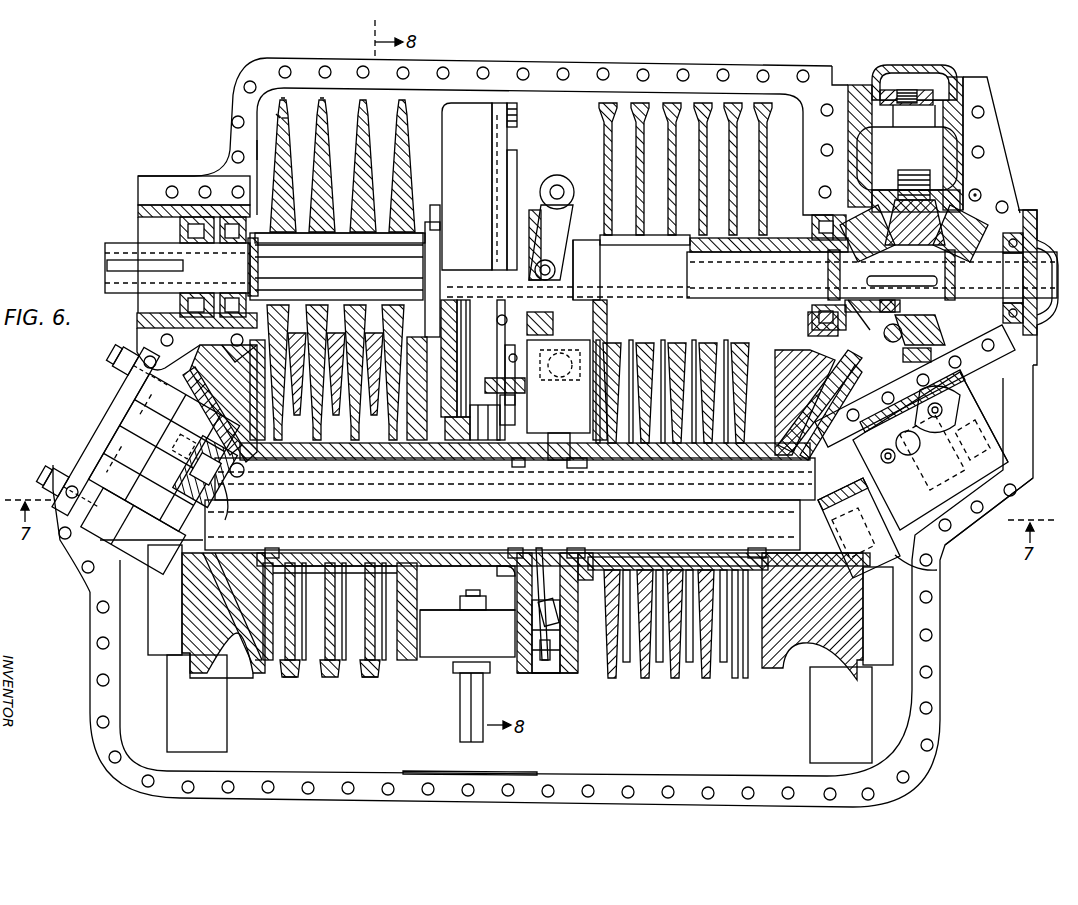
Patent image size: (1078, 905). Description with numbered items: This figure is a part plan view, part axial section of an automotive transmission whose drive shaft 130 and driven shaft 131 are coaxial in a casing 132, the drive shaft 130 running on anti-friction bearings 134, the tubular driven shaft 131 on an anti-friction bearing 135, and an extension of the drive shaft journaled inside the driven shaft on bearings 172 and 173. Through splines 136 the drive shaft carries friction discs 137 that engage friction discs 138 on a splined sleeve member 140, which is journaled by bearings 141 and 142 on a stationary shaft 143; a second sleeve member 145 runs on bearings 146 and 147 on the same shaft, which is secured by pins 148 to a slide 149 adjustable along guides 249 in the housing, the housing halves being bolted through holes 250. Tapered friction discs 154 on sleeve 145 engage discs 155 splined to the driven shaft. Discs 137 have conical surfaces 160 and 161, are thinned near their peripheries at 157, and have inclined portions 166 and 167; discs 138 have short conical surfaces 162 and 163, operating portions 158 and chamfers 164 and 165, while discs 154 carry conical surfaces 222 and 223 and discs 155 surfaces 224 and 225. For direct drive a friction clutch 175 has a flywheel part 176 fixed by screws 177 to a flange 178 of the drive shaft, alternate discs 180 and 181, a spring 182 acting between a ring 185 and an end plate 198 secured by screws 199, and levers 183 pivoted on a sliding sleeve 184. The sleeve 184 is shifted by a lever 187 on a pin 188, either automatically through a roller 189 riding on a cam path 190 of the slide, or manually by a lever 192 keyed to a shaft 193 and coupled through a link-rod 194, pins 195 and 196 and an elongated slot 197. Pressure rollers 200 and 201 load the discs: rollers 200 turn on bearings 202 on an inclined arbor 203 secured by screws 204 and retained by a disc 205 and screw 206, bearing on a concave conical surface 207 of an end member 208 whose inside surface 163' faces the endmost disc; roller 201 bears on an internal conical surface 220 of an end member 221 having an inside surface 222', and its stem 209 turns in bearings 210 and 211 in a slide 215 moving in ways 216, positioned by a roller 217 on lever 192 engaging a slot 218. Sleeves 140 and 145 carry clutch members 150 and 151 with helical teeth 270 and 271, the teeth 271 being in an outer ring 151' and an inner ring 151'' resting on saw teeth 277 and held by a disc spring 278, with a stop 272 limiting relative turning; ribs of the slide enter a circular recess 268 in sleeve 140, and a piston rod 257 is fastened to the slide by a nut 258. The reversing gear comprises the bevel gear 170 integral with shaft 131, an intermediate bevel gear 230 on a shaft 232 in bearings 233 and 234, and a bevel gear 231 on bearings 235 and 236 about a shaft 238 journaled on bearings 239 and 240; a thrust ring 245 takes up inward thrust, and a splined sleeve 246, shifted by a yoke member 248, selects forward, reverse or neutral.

The drive shaft 130 is at (130, 250).
The driven shaft 131 is at (776, 240).
The casing 132 is at (537, 75).
The anti-friction bearings 134 is at (230, 218).
The anti-friction bearing 135 is at (822, 225).
The splines 136 is at (252, 262).
The friction discs 137 is at (322, 98).
The friction discs 138 is at (315, 610).
The sleeve member 140 is at (420, 553).
The anti-friction bearings 141 is at (280, 548).
The anti-friction bearings 142 is at (505, 572).
The stationary shaft 143 is at (440, 570).
The second sleeve member 145 is at (736, 672).
The cylindrical anti-friction bearings 146 is at (578, 550).
The cylindrical anti-friction bearings 147 is at (755, 548).
The pins 148 is at (190, 572).
The slide 149 is at (160, 640).
The clutch member 150 is at (525, 673).
The clutch member 151 is at (576, 625).
The outer ring 151' is at (544, 649).
The inner ring 151'' is at (509, 650).
The tapered friction discs 154 is at (644, 678).
The friction discs 155 is at (608, 108).
The thinned down portions 157 is at (403, 110).
The operating portions 158 is at (332, 678).
The conical operating surface 160 is at (262, 146).
The conical operating surface 161 is at (305, 160).
The conical operating surface 162 is at (283, 670).
The conical operating surface 163 is at (318, 679).
The conical surface 163' is at (248, 680).
The chamfer 164 is at (290, 678).
The chamfer 165 is at (365, 678).
The profile portion 166 is at (275, 115).
The profile portion 167 is at (284, 118).
The bevel gear 170 is at (893, 322).
The anti-friction bearings 172 is at (485, 290).
The anti-friction bearings 173 is at (810, 320).
The friction clutch 175 is at (462, 120).
The part 176 is at (440, 440).
The screws 177 is at (432, 208).
The flange 178 is at (440, 275).
The discs 180 is at (505, 345).
The discs 181 is at (500, 365).
The spring 182 is at (500, 420).
The levers 183 is at (498, 320).
The sliding sleeve 184 is at (556, 318).
The ring 185 is at (505, 378).
The lever 187 is at (541, 212).
The pin 188 is at (557, 185).
The roller 189 is at (577, 242).
The cam path 190 is at (592, 230).
The lever 192 is at (965, 410).
The shaft 193 is at (922, 445).
The link-rod 194 is at (845, 385).
The pin 195 is at (945, 405).
The pin 196 is at (515, 398).
The elongated slot 197 is at (565, 342).
The end plate 198 is at (518, 152).
The screws 199 is at (518, 110).
The pressure roller 200 is at (87, 590).
The pressure roller 201 is at (935, 572).
The anti-friction bearings 202 is at (122, 376).
The arbor 203 is at (165, 433).
The screws 204 is at (62, 462).
The disc 205 is at (240, 478).
The screw 206 is at (168, 500).
The concave conical surface 207 is at (190, 670).
The end member 208 is at (208, 660).
The stem portion 209 is at (965, 470).
The anti-friction bearings 210 is at (845, 435).
The anti-friction bearings 211 is at (985, 452).
The slide 215 is at (922, 362).
The ways 216 is at (968, 355).
The roller 217 is at (875, 520).
The slot 218 is at (955, 530).
The internal conical surface 220 is at (858, 680).
The end member 221 is at (797, 650).
The conical surface 222 is at (683, 648).
The inside surface 222' is at (758, 648).
The conical surface 223 is at (679, 680).
The conical surface 224 is at (770, 110).
The conical surface 225 is at (755, 112).
The intermediate bevel gear 230 is at (992, 195).
The bevel gear 231 is at (903, 333).
The shaft 232 is at (905, 143).
The anti-friction bearings 233 is at (940, 198).
The anti-friction bearings 234 is at (935, 105).
The anti-friction bearings 235 is at (1058, 280).
The anti-friction bearings 236 is at (1030, 320).
The shaft 238 is at (895, 312).
The anti-friction bearing 239 is at (862, 322).
The anti-friction bearing 240 is at (1022, 212).
The thrust ring 245 is at (918, 258).
The sleeve 246 is at (878, 305).
The yoke member 248 is at (905, 352).
The guides 249 is at (222, 730).
The holes 250 is at (668, 787).
The piston rod 257 is at (460, 736).
The nut 258 is at (462, 603).
The circular recess 268 is at (497, 680).
The teeth 270 is at (515, 479).
The teeth 271 is at (560, 433).
The stop 272 is at (558, 612).
The saw teeth 277 is at (578, 635).
The disc spring 278 is at (540, 548).